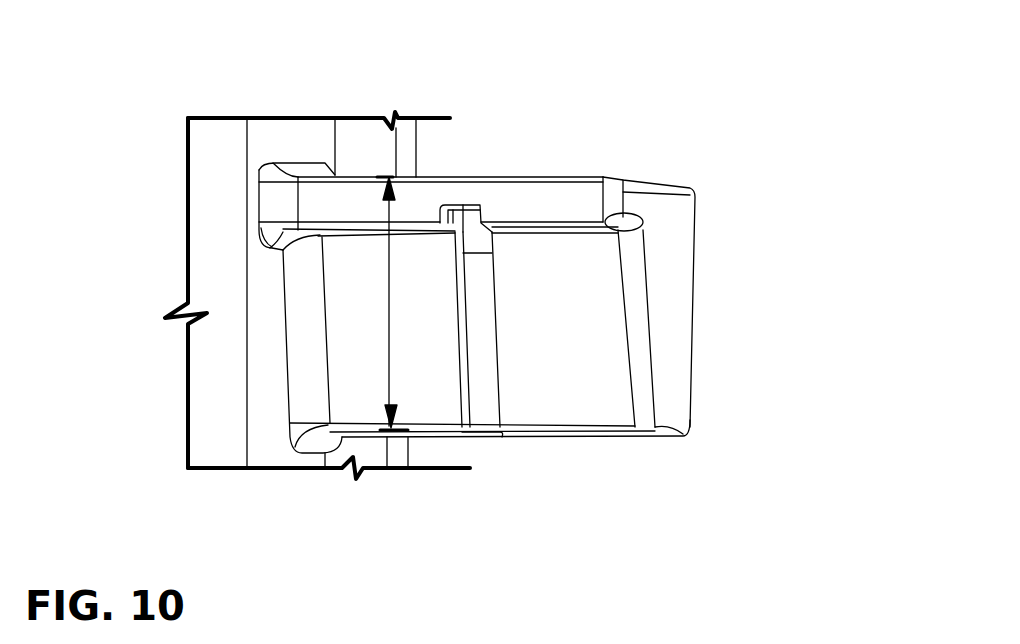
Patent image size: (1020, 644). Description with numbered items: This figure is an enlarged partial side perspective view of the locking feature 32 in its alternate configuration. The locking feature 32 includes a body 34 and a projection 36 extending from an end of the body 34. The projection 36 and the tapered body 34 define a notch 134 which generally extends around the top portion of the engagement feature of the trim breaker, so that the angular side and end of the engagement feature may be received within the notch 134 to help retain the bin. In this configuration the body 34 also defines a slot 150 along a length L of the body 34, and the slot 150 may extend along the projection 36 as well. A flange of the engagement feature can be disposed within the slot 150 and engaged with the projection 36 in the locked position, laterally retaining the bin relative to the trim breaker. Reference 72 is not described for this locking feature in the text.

The projection 36 is at (530, 175).
The locking feature 32 is at (650, 183).
The clip assembly 72 is at (757, 210).
The notch 134 is at (612, 232).
The body 34 is at (662, 357).
The slot 150 is at (485, 413).
The length L is at (392, 338).